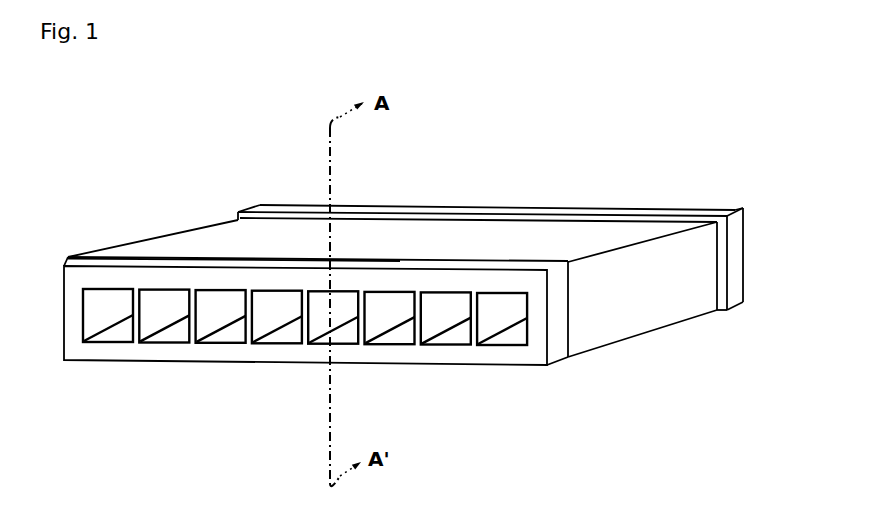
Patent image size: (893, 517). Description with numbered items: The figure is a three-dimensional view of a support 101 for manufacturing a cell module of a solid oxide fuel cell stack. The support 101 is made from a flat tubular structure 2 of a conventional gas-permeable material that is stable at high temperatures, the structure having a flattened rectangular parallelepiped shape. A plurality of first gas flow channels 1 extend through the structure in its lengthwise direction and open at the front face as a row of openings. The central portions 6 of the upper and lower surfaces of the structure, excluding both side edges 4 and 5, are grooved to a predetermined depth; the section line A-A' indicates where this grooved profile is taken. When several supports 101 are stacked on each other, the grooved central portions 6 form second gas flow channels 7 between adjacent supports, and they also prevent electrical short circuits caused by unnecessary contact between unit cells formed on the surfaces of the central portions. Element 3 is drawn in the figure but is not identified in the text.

The first gas flow channel 1 is at (390, 313).
The flat tubular structure 2 is at (178, 350).
The rear panel top face 3 is at (485, 207).
The side edge 4 is at (140, 260).
The side edge 5 is at (295, 208).
The grooved central portion 6 is at (452, 242).
The second gas flow channel 7 is at (617, 239).
The support 101 is at (502, 377).